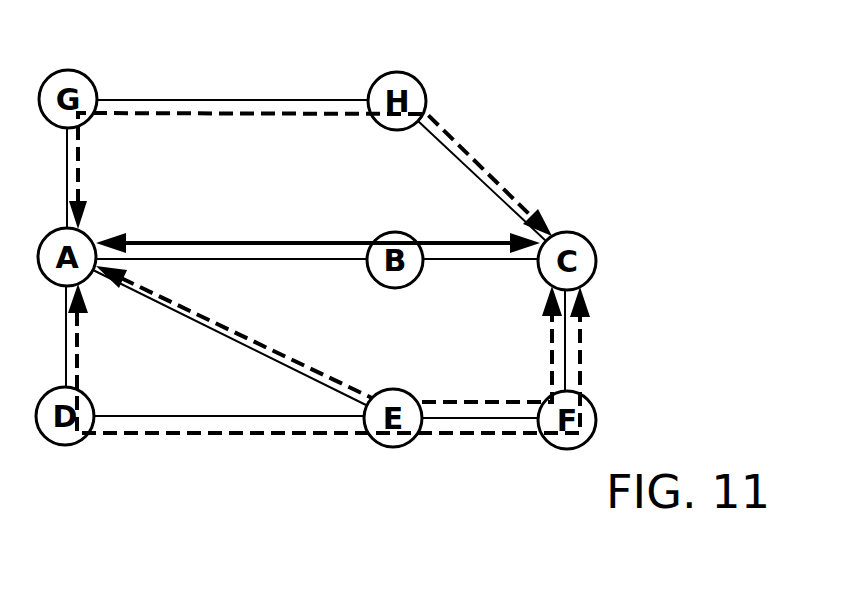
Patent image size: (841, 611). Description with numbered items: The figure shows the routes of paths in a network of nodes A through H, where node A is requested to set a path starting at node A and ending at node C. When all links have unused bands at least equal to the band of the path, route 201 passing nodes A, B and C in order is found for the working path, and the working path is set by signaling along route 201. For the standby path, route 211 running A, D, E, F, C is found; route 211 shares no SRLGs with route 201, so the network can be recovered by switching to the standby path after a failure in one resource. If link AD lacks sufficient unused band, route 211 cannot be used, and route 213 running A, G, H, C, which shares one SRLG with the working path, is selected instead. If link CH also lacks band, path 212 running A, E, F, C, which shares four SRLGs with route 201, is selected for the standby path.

The route 201 is at (234, 243).
The route 211 is at (213, 437).
The path 212 is at (292, 363).
The route 213 is at (223, 113).